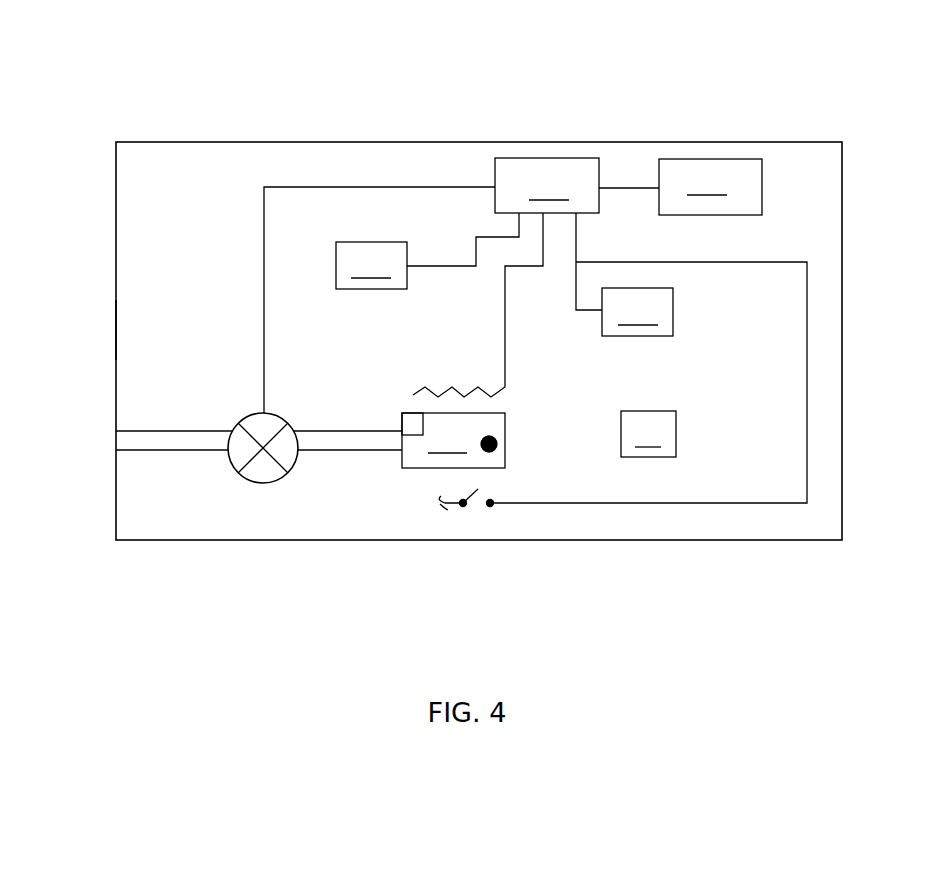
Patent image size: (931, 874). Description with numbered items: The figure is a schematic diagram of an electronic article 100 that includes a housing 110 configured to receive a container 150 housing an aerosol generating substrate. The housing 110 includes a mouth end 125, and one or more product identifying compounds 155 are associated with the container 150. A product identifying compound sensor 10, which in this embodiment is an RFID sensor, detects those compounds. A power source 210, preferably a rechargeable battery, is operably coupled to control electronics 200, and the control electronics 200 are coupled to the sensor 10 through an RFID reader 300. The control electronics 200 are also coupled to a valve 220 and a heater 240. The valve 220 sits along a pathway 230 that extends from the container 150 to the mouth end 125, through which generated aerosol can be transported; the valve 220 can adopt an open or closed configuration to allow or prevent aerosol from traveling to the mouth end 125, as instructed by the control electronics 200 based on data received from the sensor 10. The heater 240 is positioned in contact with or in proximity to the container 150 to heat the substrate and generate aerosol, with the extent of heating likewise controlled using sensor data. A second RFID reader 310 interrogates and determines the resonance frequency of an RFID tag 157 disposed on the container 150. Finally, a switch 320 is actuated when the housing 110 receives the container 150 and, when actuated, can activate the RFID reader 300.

The electronic article 100 is at (226, 71).
The housing 110 is at (728, 142).
The mouth end 125 is at (115, 332).
The control electronics 200 is at (461, 285).
The power source 210 is at (710, 187).
The second RFID reader 310 is at (427, 251).
The RFID reader 300 is at (624, 274).
The product identifying compound sensor 10 is at (648, 434).
The heater 240 is at (453, 387).
The container 150 is at (453, 440).
The RFID tag 157 is at (410, 416).
The product identifying compounds 155 is at (498, 438).
The pathway 230 is at (148, 448).
The valve 220 is at (263, 482).
The switch 320 is at (468, 521).